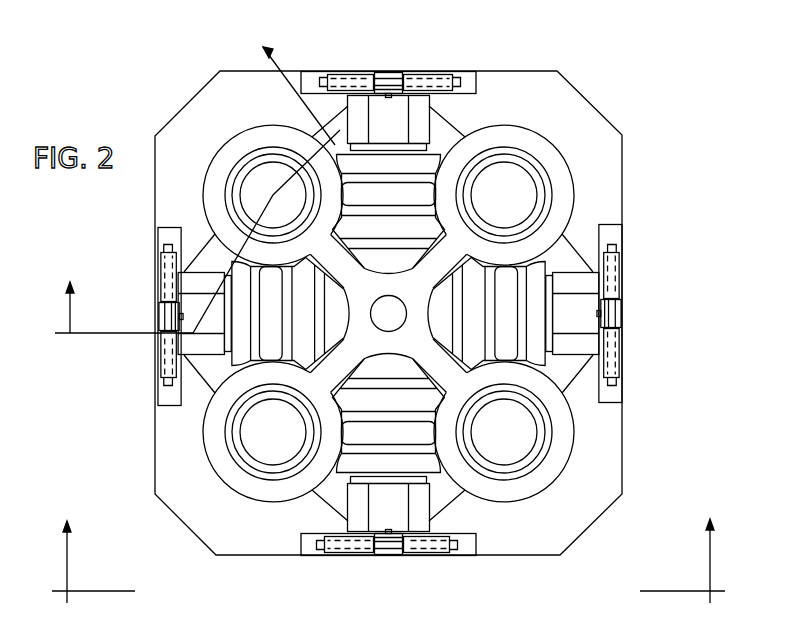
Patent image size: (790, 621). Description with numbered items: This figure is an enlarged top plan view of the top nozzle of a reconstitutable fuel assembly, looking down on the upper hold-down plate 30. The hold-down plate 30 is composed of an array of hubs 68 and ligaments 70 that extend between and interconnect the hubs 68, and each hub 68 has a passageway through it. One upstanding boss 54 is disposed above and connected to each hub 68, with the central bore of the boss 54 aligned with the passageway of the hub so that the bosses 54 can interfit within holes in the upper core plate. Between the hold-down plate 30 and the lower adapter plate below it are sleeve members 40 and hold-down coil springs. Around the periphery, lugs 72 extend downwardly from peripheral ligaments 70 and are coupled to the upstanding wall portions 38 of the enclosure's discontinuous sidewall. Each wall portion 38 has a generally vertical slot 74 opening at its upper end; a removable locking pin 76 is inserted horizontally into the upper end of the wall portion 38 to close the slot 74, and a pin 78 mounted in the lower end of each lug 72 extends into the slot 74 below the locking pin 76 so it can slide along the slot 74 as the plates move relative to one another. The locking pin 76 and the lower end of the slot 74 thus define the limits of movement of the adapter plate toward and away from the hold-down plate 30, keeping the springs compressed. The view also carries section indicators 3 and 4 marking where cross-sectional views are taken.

The upper hold-down plate 30 is at (580, 159).
The upstanding wall portions 38 is at (312, 80).
The sleeve members 40 is at (250, 160).
The upstanding bosses 54 is at (230, 197).
The hubs 68 is at (212, 157).
The ligaments 70 is at (482, 110).
The lugs 72 is at (466, 115).
The vertical slot 74 is at (418, 77).
The removable locking pin 76 is at (398, 76).
The pin 78 is at (390, 72).
The section line 3- 3 is at (385, 561).
The section line 4- 4 is at (197, 177).